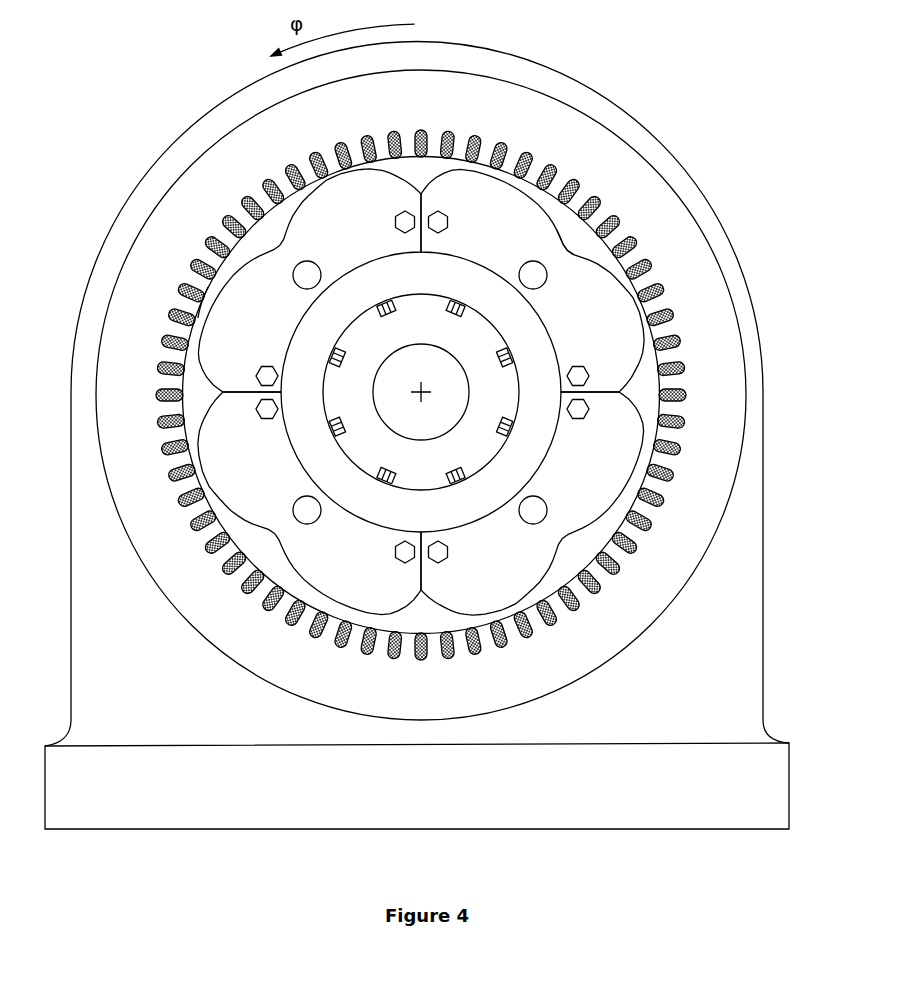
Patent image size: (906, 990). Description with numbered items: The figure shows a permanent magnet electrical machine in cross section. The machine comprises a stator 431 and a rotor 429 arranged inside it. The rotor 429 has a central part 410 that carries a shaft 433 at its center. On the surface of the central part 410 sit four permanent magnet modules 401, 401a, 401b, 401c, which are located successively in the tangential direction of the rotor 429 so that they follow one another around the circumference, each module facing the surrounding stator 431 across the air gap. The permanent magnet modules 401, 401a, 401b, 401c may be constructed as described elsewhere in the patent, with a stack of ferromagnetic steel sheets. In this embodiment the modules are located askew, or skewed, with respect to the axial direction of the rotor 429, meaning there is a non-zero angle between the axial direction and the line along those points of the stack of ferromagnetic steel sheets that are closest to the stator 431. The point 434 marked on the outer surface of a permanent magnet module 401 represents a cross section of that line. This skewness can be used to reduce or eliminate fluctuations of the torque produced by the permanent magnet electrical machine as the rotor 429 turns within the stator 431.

The permanent magnet module 401 is at (364, 223).
The permanent magnet module 401a is at (525, 228).
The permanent magnet module 401b is at (620, 481).
The permanent magnet module 401c is at (270, 481).
The central part 410 is at (392, 456).
The rotor 429 is at (574, 232).
The stator 431 is at (556, 671).
The shaft 433 is at (418, 383).
The point 434 is at (216, 302).